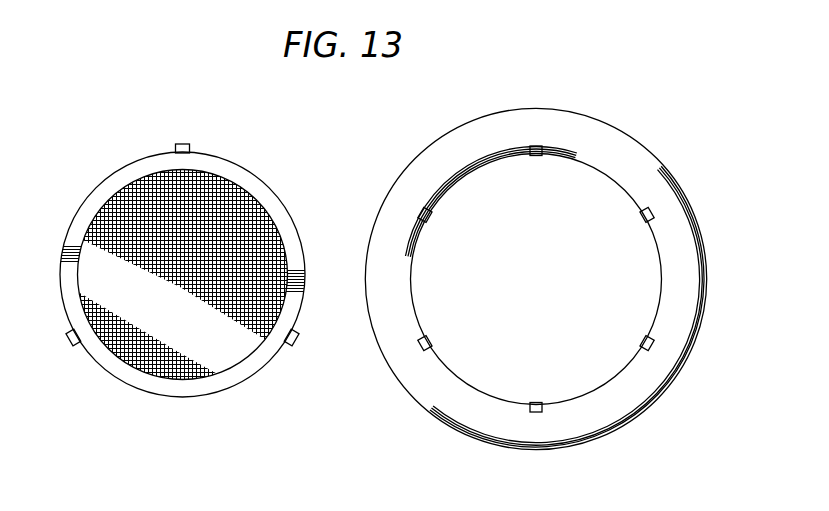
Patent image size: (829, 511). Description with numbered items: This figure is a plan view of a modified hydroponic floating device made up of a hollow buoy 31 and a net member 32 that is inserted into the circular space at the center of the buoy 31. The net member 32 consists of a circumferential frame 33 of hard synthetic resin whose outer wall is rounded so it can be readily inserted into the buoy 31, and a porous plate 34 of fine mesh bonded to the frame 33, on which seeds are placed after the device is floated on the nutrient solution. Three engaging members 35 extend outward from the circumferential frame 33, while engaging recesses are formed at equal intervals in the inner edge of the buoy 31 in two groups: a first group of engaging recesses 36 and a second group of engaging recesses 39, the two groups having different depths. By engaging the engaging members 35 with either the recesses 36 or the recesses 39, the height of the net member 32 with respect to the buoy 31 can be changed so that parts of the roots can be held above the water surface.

The hollow buoy 31 is at (620, 150).
The net member 32 is at (230, 195).
The circumferential frame 33 is at (118, 178).
The porous plate 34 is at (112, 218).
The engaging members 35 is at (186, 145).
The first group of engaging recesses 36 is at (535, 146).
The second group of engaging recesses 39 is at (418, 212).